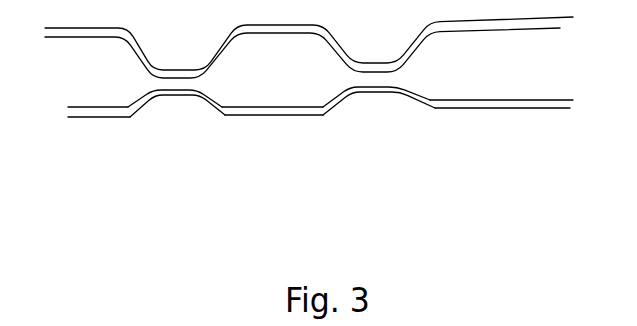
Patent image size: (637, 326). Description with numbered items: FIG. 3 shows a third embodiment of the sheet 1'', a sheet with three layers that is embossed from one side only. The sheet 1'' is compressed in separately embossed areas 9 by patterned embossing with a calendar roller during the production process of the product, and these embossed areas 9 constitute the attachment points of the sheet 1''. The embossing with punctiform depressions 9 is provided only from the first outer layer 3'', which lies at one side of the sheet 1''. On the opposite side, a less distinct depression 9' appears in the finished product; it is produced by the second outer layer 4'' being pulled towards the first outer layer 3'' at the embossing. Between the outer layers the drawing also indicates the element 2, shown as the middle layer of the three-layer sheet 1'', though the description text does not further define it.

The sheet 1'' is at (303, 124).
The base plate 2 is at (319, 119).
The first outer layer 3'' is at (309, 93).
The second outer layer 4'' is at (501, 134).
The embossed areas 9 is at (176, 124).
The less distinct depression 9' is at (379, 128).